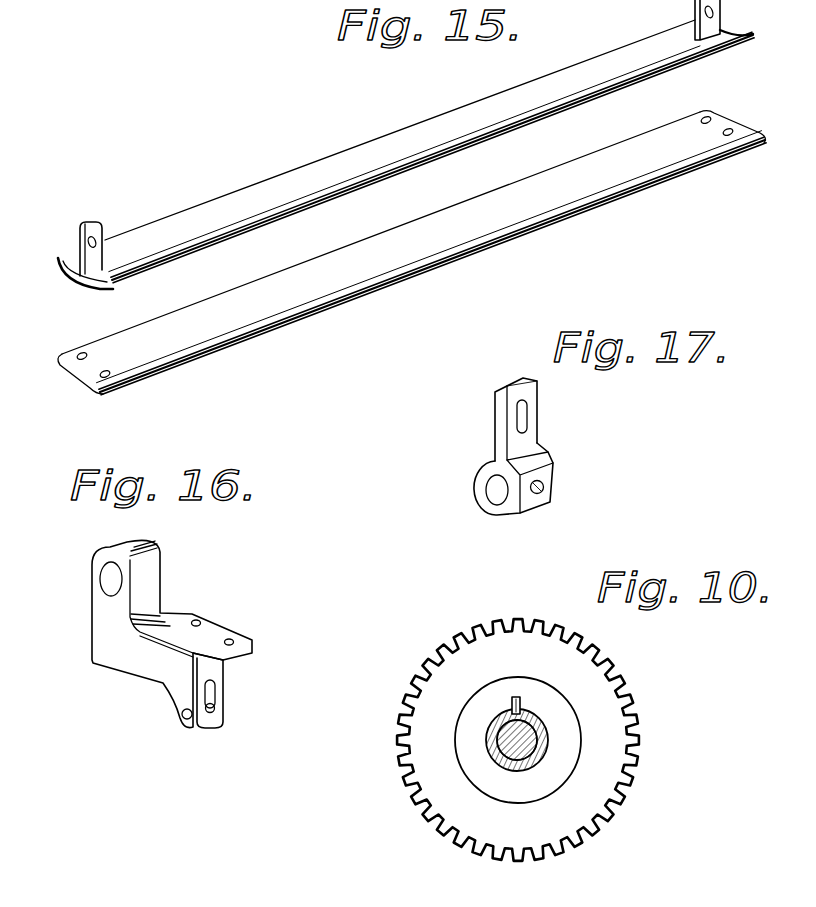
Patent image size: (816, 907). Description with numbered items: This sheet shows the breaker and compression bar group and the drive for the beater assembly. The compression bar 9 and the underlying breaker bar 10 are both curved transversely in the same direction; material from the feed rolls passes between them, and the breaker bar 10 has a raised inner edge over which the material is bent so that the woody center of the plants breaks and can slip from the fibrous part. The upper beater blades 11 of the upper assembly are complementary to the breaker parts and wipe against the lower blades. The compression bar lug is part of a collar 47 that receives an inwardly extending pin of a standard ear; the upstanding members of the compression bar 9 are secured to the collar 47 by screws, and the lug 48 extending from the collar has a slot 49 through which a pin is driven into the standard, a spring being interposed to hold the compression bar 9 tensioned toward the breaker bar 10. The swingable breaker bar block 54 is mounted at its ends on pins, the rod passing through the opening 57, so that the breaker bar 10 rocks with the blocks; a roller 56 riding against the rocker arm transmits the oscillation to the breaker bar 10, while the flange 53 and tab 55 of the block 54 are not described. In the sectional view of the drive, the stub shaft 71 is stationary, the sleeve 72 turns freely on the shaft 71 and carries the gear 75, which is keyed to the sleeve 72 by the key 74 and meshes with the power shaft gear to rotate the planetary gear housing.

In FIG. 15, the compression bar 9 is at (322, 163).
In FIG. 15, the breaker bar 10 is at (390, 247).
In FIG. 15, the beater blades 11 is at (172, 202).
In FIG. 17, the collar 47 is at (513, 510).
In FIG. 17, the lug 48 is at (500, 426).
In FIG. 17, the slot 49 is at (530, 415).
In FIG. 16, the horizontal flange 53 is at (232, 635).
In FIG. 16, the block 54 is at (112, 652).
In FIG. 16, the lower tab 55 is at (185, 708).
In FIG. 16, the roller 56 is at (223, 696).
In FIG. 16, the opening 57 is at (105, 583).
In FIG. 10, the stub shaft 71 is at (505, 760).
In FIG. 10, the sleeve 72 is at (547, 740).
In FIG. 10, the key 74 is at (517, 700).
In FIG. 10, the gear 75 is at (600, 693).